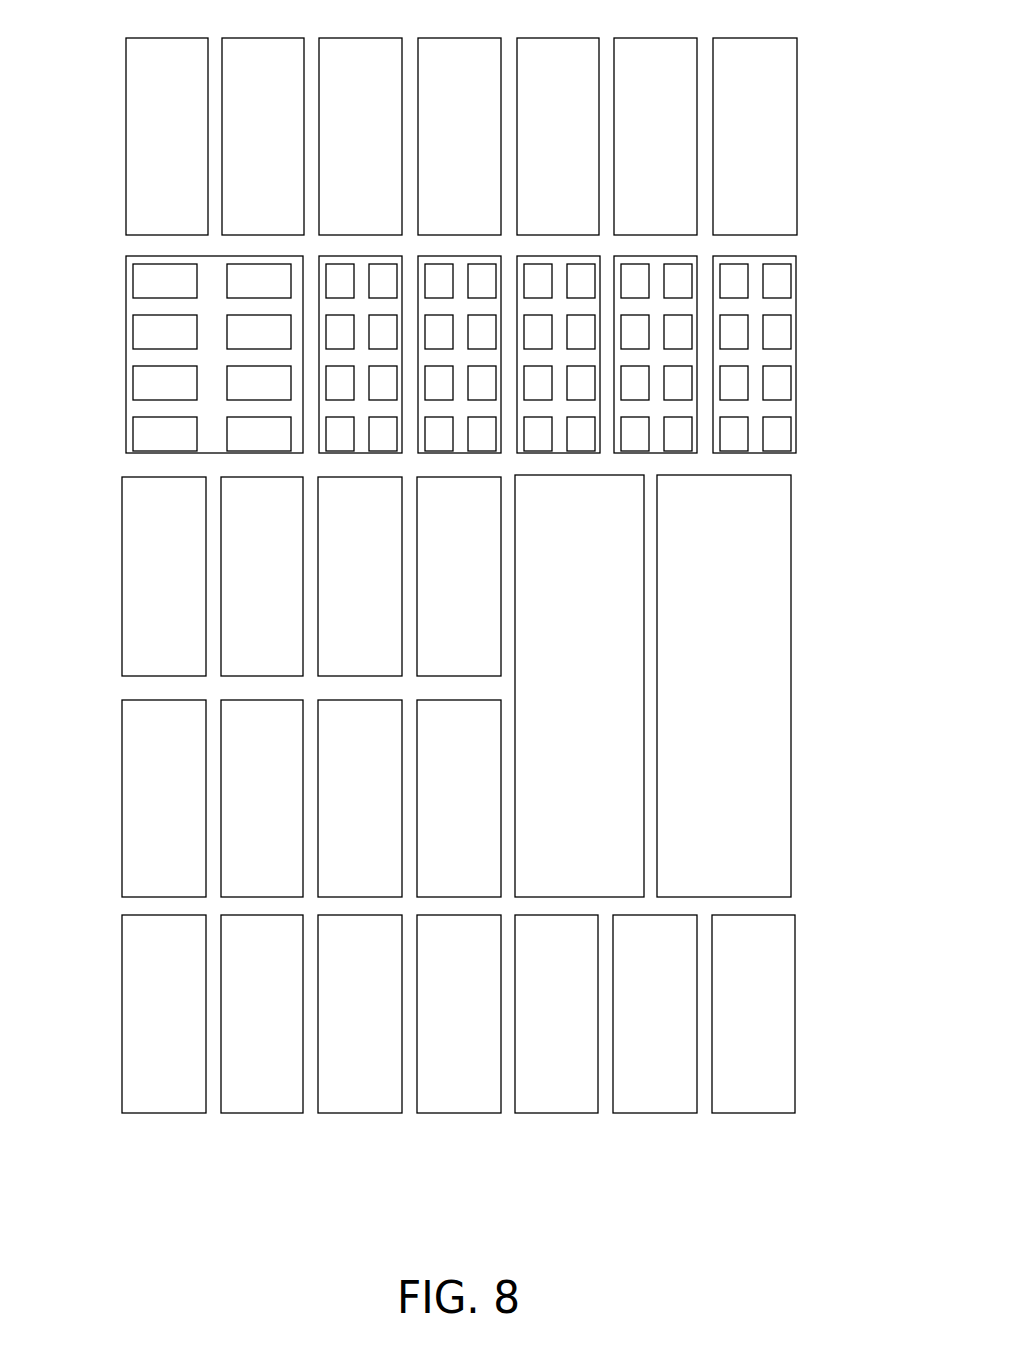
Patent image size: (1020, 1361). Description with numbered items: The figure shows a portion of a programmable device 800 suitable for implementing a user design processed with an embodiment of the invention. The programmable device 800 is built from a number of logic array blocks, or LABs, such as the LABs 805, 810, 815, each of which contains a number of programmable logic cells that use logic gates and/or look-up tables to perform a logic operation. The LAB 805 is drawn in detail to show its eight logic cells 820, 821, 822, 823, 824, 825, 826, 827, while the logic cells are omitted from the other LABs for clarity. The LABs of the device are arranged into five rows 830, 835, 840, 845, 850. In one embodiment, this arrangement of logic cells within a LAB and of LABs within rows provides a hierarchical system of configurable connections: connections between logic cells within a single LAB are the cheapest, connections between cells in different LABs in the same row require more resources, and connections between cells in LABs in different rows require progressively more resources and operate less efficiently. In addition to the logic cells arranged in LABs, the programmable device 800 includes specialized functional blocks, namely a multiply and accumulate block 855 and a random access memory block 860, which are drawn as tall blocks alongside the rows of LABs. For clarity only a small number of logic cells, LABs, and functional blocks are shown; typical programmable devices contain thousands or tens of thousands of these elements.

The programmable device 800 is at (206, 1176).
The logic array block 805 is at (180, 354).
The logic array block 810 is at (167, 136).
The logic array block 815 is at (765, 1082).
The logic cell 820 is at (165, 434).
The logic cell 821 is at (259, 434).
The logic cell 822 is at (165, 383).
The logic cell 823 is at (259, 383).
The logic cell 824 is at (165, 332).
The logic cell 825 is at (259, 332).
The logic cell 826 is at (259, 281).
The logic cell 827 is at (165, 281).
The row 830 is at (510, 128).
The row 835 is at (476, 358).
The row 840 is at (137, 468).
The row 845 is at (137, 695).
The row 850 is at (417, 1050).
The multiply and accumulate block 855 is at (579, 686).
The random access memory block 860 is at (724, 686).